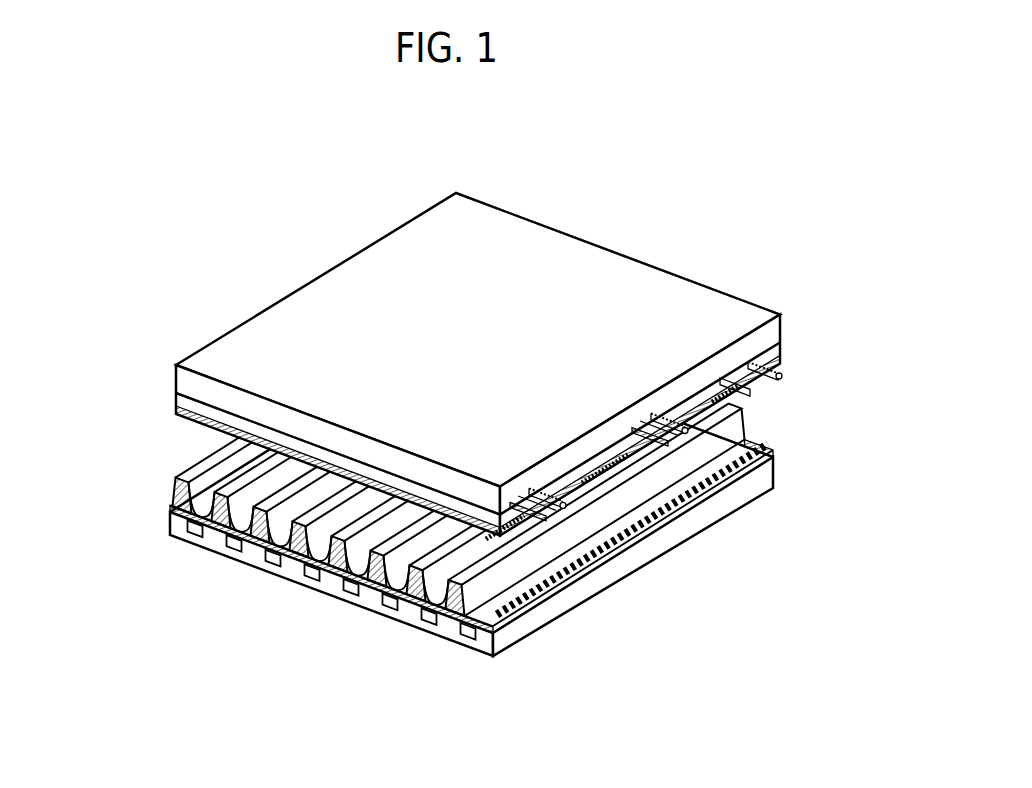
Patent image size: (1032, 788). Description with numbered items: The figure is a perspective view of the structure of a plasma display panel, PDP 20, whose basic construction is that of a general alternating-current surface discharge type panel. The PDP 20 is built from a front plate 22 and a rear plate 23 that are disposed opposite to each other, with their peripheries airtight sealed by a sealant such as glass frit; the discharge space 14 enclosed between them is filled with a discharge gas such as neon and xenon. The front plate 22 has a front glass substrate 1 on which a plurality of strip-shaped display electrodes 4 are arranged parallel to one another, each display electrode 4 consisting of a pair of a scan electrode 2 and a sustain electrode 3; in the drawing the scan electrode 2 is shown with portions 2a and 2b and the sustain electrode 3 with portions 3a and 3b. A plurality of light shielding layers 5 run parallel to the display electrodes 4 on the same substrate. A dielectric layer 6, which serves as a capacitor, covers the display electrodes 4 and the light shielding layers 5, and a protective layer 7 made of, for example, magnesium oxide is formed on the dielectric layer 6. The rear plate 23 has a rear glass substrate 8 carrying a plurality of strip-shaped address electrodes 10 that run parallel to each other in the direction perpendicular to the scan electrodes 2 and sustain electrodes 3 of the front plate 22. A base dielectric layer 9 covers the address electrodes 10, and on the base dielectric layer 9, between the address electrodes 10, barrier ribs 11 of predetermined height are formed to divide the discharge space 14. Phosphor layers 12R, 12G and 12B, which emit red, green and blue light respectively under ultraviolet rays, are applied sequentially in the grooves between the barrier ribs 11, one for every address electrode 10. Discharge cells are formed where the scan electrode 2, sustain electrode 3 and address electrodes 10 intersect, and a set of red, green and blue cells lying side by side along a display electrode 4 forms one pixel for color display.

The front glass substrate 1 is at (700, 307).
The scan electrode 2 is at (845, 377).
The transparent electrode of scan electrode 2a is at (752, 380).
The bus electrode of scan electrode 2b is at (783, 377).
The sustain electrode 3 is at (823, 448).
The transparent electrode of sustain electrode 3a is at (745, 432).
The bus electrode of sustain electrode 3b is at (765, 481).
The display electrode 4 is at (829, 537).
The light shielding layer 5 is at (650, 427).
The dielectric layer 6 is at (779, 358).
The protective layer 7 is at (782, 368).
The rear glass substrate 8 is at (400, 613).
The base dielectric layer 9 is at (560, 593).
The address electrode 10 is at (423, 610).
The barrier rib 11 is at (497, 635).
The red phosphor layer 12R is at (352, 571).
The green phosphor layer 12G is at (387, 585).
The blue phosphor layer 12B is at (438, 603).
The discharge space 14 is at (185, 523).
The PDP 20 is at (110, 370).
The front plate 22 is at (162, 353).
The rear plate 23 is at (162, 475).